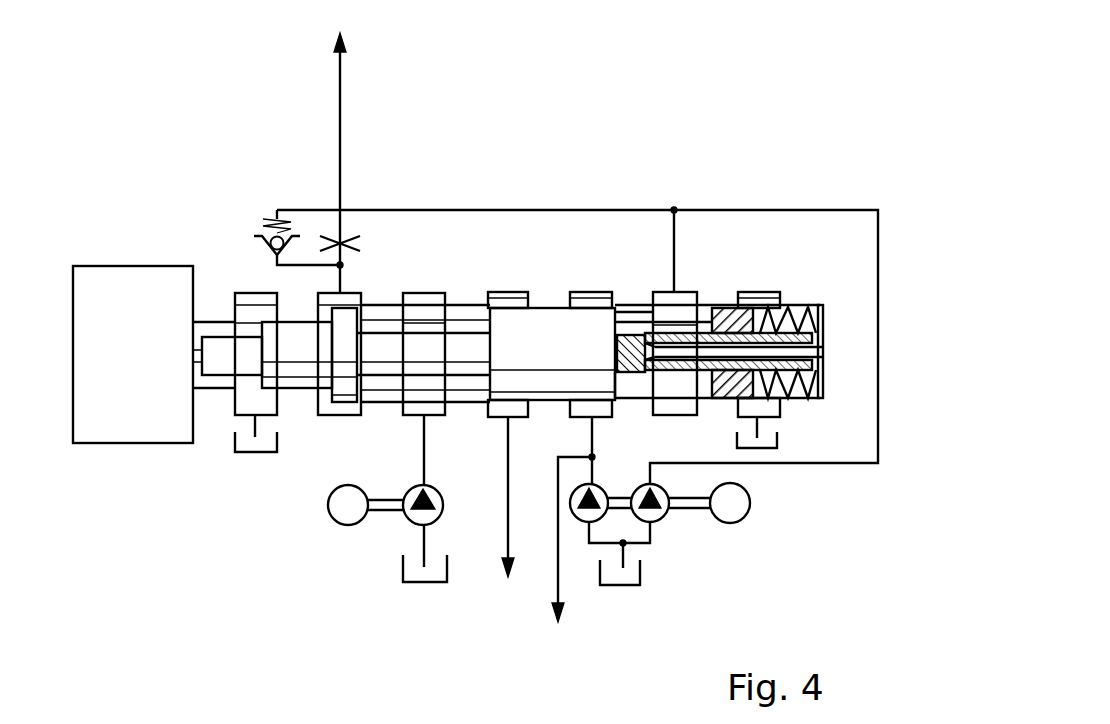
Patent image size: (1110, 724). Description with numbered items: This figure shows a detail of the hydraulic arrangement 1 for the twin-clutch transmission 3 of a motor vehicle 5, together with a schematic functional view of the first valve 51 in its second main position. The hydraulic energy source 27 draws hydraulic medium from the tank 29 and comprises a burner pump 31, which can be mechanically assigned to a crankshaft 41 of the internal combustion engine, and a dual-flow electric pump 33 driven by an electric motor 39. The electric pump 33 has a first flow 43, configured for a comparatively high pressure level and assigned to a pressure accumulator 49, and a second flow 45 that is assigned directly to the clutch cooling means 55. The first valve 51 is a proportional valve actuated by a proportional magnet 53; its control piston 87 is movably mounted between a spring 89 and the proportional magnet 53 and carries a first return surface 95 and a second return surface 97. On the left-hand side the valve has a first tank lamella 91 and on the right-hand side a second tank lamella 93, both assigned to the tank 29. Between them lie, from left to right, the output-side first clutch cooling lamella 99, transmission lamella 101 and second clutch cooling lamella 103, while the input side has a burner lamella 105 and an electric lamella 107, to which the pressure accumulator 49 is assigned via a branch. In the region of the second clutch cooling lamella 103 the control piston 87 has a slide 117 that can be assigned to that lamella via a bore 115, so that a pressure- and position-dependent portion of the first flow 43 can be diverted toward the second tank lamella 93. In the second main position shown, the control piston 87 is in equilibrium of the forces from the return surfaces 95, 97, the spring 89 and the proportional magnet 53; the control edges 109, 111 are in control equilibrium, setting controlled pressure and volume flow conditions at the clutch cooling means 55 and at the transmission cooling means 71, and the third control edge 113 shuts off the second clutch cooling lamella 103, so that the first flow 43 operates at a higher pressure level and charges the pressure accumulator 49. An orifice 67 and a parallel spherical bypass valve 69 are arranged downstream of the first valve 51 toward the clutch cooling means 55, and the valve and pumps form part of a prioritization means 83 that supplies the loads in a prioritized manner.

The hydraulic arrangement 1 is at (762, 154).
The twin-clutch transmission 3 is at (494, 87).
The motor vehicle 5 is at (298, 192).
The hydraulic energy source 27 is at (778, 650).
The tank 29 is at (232, 455).
The burner pump 31 is at (440, 493).
The dual-flow electric pump 33 is at (652, 528).
The electric motor 39 is at (750, 510).
The crankshaft 41 is at (388, 497).
The first flow 43 is at (582, 523).
The second flow 45 is at (668, 517).
The pressure accumulator 49 is at (545, 654).
The first valve 51 is at (547, 278).
The proportional magnet 53 is at (120, 372).
The clutch cooling means 55 is at (325, 26).
The orifice 67 is at (343, 240).
The spherical bypass valve 69 is at (263, 224).
The transmission cooling means 71 is at (497, 609).
The prioritization means 83 is at (196, 133).
The control piston 87 is at (468, 322).
The spring 89 is at (818, 306).
The first tank lamella 91 is at (243, 293).
The second tank lamella 93 is at (767, 292).
The first return surface 95 is at (320, 405).
The second return surface 97 is at (652, 334).
The first clutch cooling lamella 99 is at (343, 294).
The transmission lamella 101 is at (508, 292).
The second clutch cooling lamella 103 is at (682, 292).
The burner lamella 105 is at (429, 292).
The electric lamella 107 is at (591, 292).
The first control edge 109 is at (358, 388).
The second control edge 111 is at (480, 388).
The third control edge 113 is at (625, 387).
The bore 115 is at (647, 373).
The slide 117 is at (822, 345).